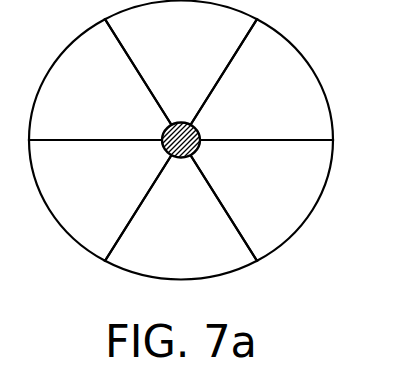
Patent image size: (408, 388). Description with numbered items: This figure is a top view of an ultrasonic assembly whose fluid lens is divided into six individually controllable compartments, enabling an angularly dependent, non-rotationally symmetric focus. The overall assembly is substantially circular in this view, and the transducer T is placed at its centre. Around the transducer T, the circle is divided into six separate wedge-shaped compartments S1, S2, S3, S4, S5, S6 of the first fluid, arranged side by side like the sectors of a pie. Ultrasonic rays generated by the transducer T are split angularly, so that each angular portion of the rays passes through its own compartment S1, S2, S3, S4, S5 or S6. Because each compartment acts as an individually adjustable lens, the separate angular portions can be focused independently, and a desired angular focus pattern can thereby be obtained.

The fluid lens compartment S1 is at (105, 79).
The fluid lens compartment S2 is at (181, 70).
The fluid lens compartment S3 is at (257, 79).
The fluid lens compartment S4 is at (257, 200).
The fluid lens compartment S5 is at (181, 209).
The fluid lens compartment S6 is at (105, 200).
The transducer T is at (182, 124).